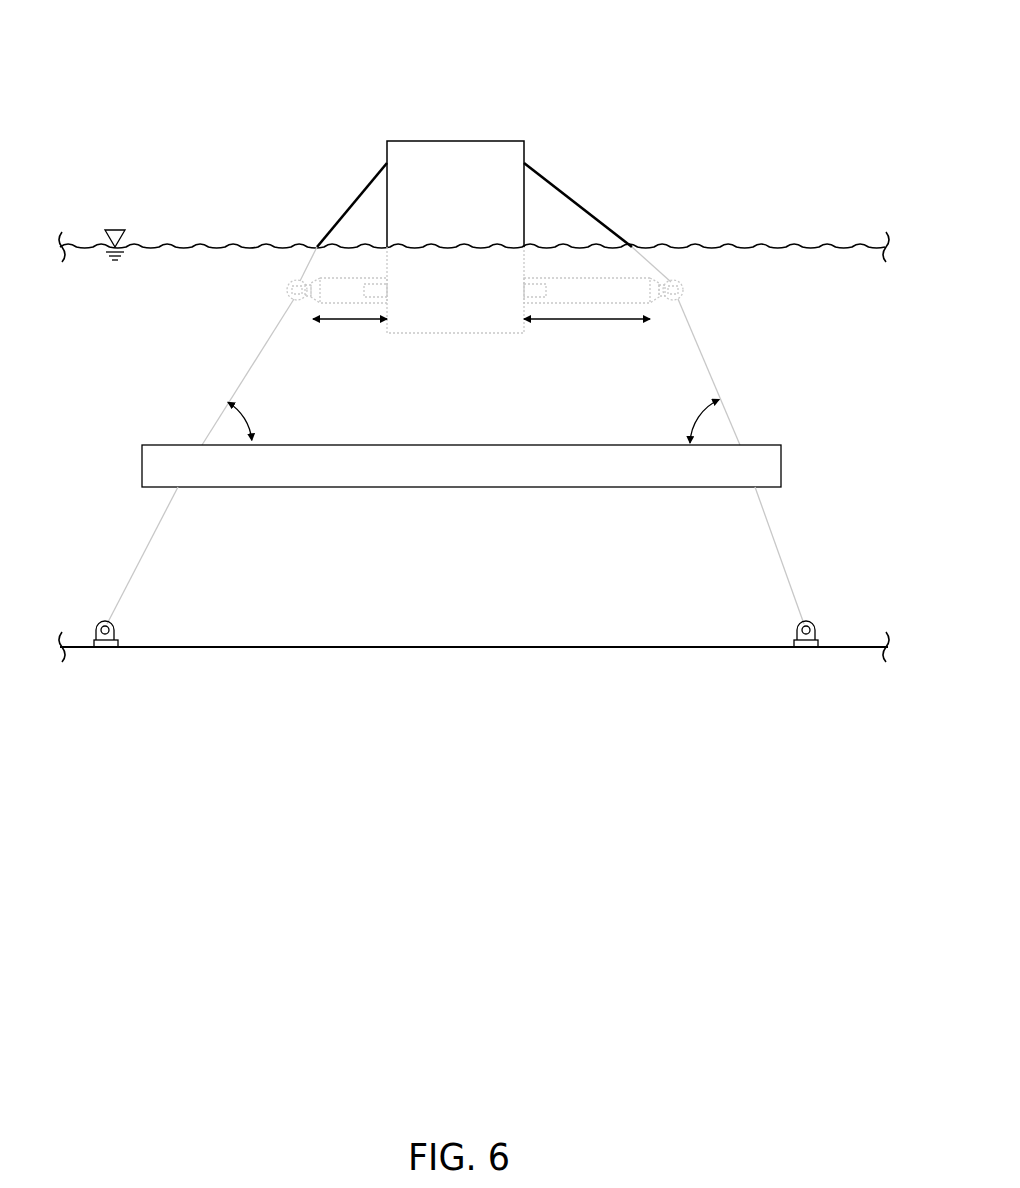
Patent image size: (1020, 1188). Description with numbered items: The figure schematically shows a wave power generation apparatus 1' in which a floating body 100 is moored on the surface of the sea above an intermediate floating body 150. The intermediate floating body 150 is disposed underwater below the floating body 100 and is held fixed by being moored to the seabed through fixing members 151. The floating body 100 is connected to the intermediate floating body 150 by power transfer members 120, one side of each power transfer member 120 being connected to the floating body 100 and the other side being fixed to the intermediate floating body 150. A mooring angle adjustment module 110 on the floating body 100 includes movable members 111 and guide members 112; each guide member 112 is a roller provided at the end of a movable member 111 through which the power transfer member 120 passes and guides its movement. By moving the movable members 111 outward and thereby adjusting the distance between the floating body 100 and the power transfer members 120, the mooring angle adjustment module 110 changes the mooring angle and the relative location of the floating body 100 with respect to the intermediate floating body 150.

The wave power generation apparatus 1' is at (474, 339).
The floating body 100 is at (455, 140).
The mooring angle adjustment module 110 is at (516, 216).
The movable member 111 is at (621, 288).
The guide member 112 is at (608, 188).
The power transfer member 120 is at (240, 372).
The intermediate floating body 150 is at (783, 466).
The fixing member 151 is at (143, 556).